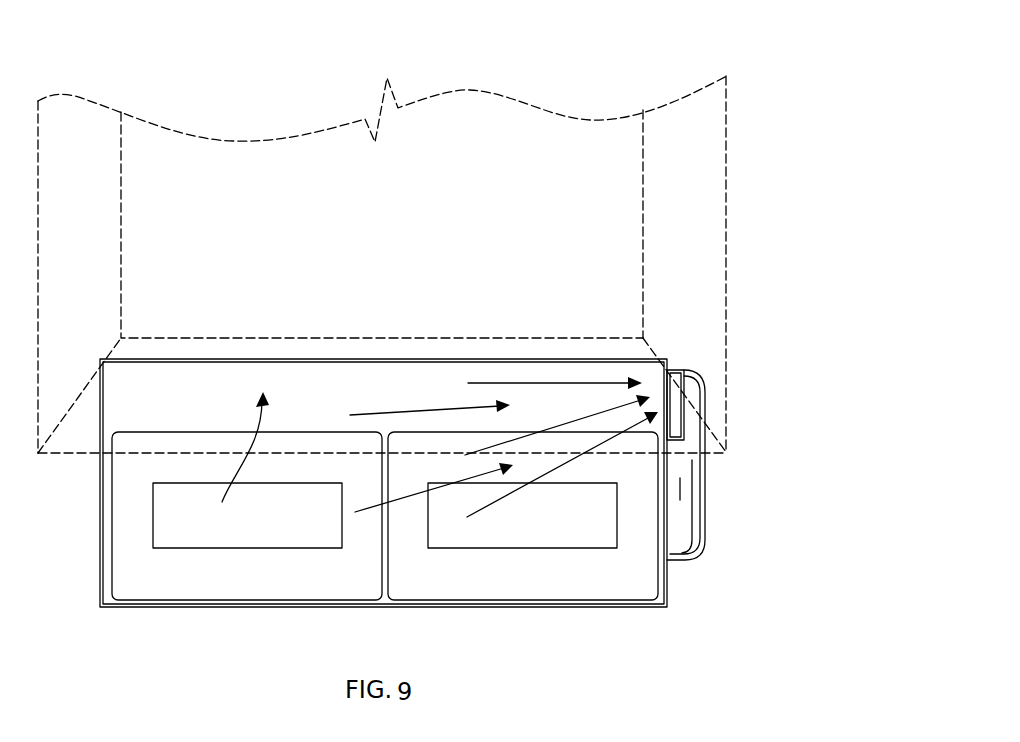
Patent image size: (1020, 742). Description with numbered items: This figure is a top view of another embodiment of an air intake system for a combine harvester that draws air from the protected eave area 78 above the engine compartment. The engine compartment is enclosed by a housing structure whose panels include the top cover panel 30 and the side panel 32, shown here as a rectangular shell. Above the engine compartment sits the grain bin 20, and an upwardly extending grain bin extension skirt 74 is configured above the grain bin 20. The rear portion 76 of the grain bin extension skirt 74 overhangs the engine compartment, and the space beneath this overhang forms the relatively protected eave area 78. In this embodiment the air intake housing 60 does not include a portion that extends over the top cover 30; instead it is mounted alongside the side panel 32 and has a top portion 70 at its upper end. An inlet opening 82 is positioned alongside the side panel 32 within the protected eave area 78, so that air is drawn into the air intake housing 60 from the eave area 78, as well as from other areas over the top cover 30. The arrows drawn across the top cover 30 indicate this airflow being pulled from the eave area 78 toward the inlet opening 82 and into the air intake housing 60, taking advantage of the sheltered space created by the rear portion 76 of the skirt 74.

The grain bin 20 is at (543, 138).
The grain bin extension skirt 74 is at (727, 225).
The rear portion 76 is at (90, 455).
The side panel 32 is at (667, 585).
The top cover panel 30 is at (305, 602).
The top portion 70 is at (695, 374).
The inlet opening 82 is at (672, 417).
The air intake housing 60 is at (708, 516).
The eave area 78 is at (432, 457).